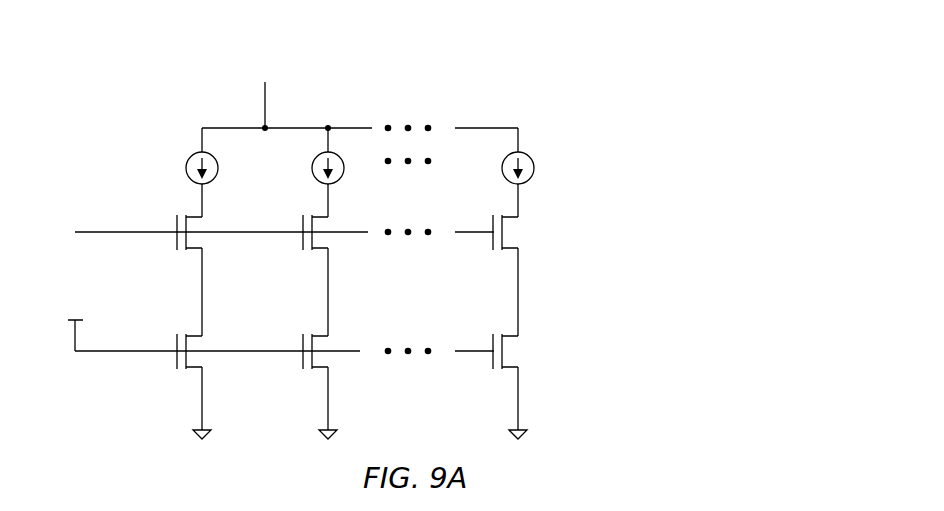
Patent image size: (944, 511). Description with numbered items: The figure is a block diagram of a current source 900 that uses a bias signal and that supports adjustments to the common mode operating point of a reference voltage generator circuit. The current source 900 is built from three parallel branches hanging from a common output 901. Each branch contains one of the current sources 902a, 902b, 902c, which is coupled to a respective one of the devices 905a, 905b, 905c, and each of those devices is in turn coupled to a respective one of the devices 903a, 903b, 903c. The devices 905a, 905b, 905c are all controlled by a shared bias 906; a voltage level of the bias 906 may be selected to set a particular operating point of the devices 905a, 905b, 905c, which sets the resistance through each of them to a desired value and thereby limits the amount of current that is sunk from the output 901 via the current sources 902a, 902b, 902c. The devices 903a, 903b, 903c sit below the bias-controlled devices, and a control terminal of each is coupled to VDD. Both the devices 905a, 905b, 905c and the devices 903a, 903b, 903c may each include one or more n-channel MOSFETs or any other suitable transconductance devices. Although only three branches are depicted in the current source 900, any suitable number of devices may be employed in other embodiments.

The current source 900 is at (558, 121).
The output 901 is at (283, 84).
The current source 902a is at (218, 167).
The current source 902b is at (340, 181).
The current source 902c is at (535, 168).
The device 903a is at (204, 327).
The device 903b is at (330, 327).
The device 903c is at (521, 327).
The device 905a is at (204, 258).
The device 905b is at (330, 257).
The device 905c is at (521, 258).
The bias 906 is at (284, 233).